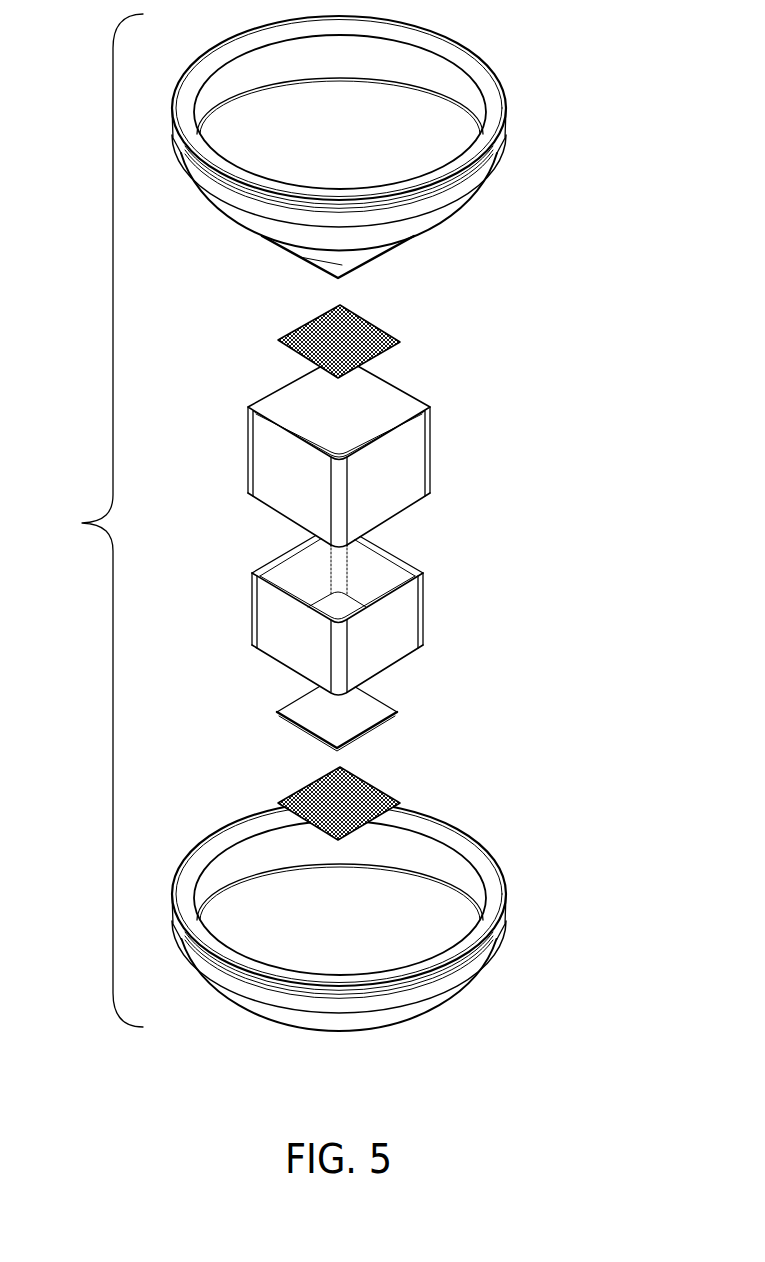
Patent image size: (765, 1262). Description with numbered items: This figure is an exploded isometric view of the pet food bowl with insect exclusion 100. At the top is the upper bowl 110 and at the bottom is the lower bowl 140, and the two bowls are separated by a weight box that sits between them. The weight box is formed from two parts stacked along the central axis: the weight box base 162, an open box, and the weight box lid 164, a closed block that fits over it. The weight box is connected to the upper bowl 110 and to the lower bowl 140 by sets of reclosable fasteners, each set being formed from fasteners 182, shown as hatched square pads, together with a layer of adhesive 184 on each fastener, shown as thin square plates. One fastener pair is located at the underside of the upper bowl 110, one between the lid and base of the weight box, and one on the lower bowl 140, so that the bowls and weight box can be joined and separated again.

The pet food bowl with insect exclusion 100 is at (89, 520).
The upper bowl 110 is at (534, 118).
The lower bowl 140 is at (512, 821).
The weight box base 162 is at (403, 617).
The weight box lid 164 is at (408, 462).
The fastener 182 is at (358, 263).
The layer of adhesive 184 is at (301, 257).